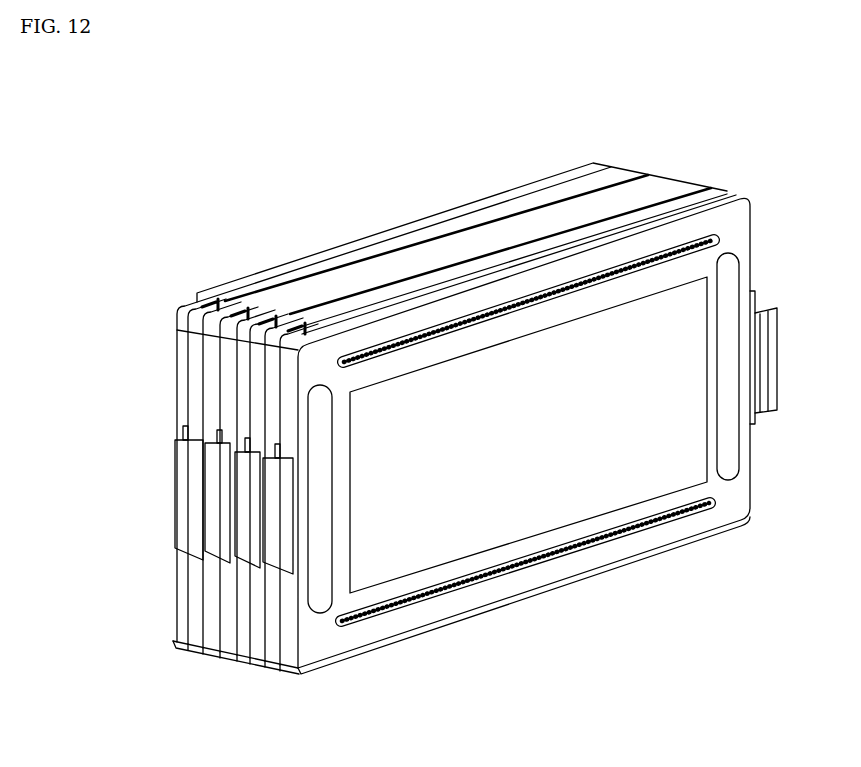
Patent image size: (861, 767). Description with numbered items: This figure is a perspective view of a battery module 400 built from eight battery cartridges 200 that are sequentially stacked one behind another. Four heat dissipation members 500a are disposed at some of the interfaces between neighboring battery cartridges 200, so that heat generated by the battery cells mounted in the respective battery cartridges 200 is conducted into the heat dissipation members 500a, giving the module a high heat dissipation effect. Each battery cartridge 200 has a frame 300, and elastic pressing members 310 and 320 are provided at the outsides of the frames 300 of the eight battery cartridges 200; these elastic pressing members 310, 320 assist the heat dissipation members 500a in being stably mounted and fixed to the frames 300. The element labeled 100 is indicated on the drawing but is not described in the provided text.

The battery cell assembly 100 is at (683, 449).
The battery cartridge 200 is at (198, 299).
The frame 300 is at (323, 625).
The elastic pressing member 310 is at (467, 583).
The elastic pressing member 320 is at (697, 244).
The battery module 400 is at (68, 124).
The heat dissipation member 500a is at (398, 225).